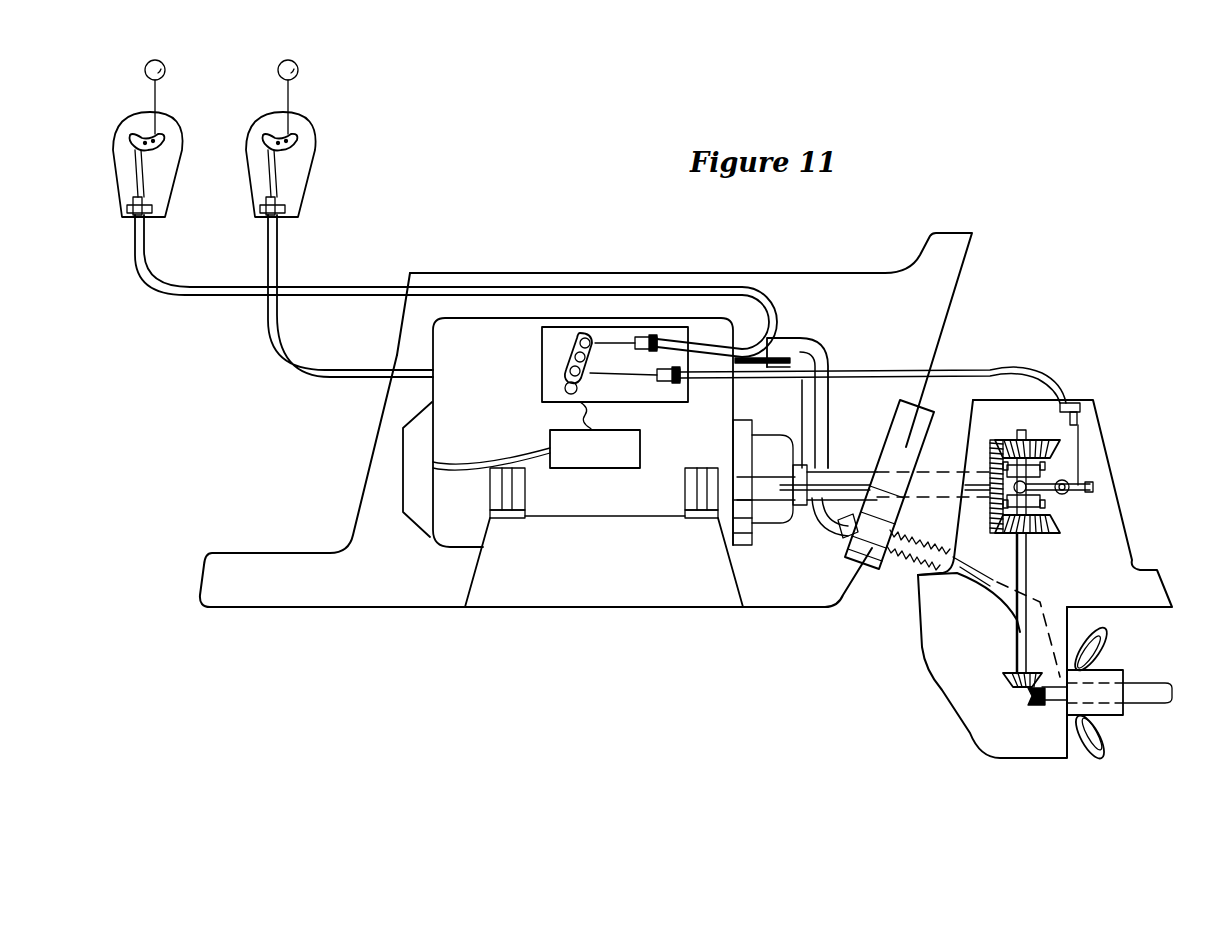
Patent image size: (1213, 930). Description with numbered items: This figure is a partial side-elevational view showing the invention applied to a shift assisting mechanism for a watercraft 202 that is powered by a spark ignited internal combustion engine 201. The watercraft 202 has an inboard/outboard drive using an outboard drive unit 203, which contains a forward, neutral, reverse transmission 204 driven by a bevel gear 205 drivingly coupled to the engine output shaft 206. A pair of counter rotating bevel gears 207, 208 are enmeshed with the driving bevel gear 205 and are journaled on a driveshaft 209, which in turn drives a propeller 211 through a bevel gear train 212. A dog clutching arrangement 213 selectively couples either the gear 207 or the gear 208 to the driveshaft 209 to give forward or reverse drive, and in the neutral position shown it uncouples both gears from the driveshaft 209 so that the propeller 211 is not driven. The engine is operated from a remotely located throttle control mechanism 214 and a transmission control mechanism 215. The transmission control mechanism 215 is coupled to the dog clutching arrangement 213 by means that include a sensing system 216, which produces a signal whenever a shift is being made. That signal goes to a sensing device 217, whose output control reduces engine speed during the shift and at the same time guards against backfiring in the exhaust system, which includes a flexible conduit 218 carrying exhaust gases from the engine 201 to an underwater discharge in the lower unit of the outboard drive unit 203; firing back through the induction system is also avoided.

The internal combustion engine 201 is at (548, 507).
The watercraft 202 is at (247, 597).
The outboard drive unit 203 is at (1115, 427).
The forward, neutral, reverse transmission 204 is at (1080, 517).
The bevel gear 205 is at (990, 457).
The engine output shaft 206 is at (813, 538).
The counter rotating bevel gear 207 is at (1040, 443).
The counter rotating bevel gear 208 is at (1040, 535).
The driveshaft 209 is at (1015, 637).
The propeller 211 is at (1108, 648).
The bevel gear train 212 is at (1030, 698).
The dog clutching arrangement 213 is at (1045, 468).
The throttle control mechanism 214 is at (328, 158).
The transmission control mechanism 215 is at (190, 158).
The sensing system 216 is at (618, 326).
The sensing device 217 is at (597, 460).
The flexible conduit 218 is at (815, 440).